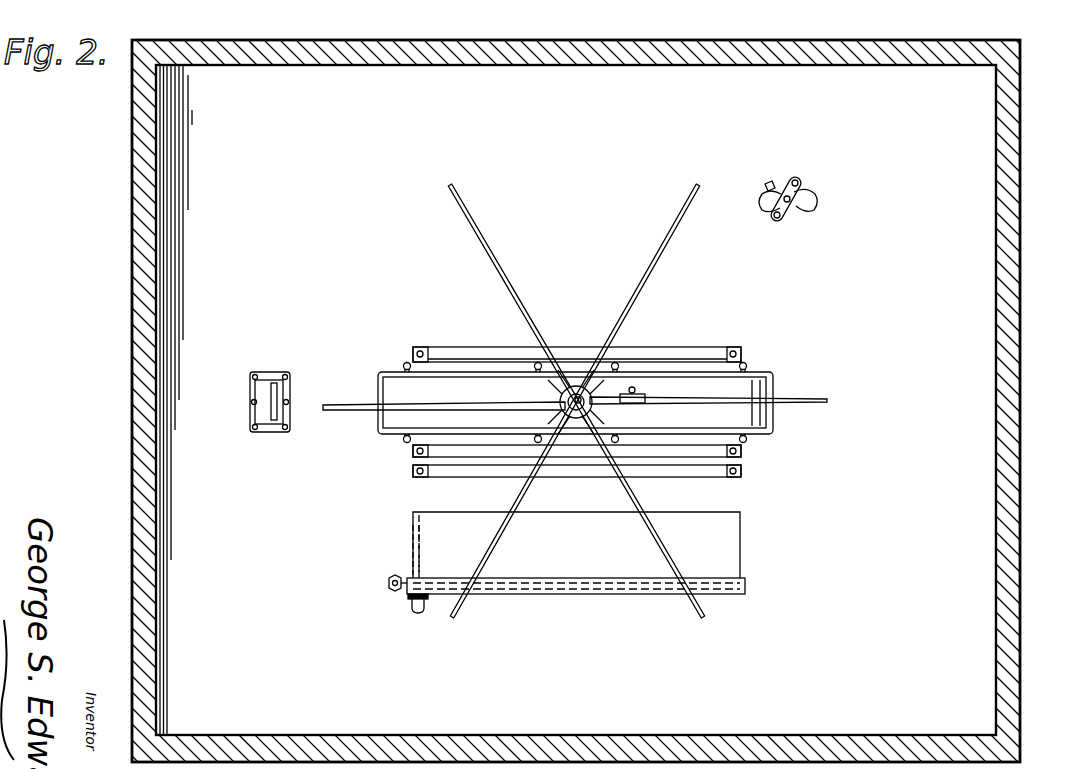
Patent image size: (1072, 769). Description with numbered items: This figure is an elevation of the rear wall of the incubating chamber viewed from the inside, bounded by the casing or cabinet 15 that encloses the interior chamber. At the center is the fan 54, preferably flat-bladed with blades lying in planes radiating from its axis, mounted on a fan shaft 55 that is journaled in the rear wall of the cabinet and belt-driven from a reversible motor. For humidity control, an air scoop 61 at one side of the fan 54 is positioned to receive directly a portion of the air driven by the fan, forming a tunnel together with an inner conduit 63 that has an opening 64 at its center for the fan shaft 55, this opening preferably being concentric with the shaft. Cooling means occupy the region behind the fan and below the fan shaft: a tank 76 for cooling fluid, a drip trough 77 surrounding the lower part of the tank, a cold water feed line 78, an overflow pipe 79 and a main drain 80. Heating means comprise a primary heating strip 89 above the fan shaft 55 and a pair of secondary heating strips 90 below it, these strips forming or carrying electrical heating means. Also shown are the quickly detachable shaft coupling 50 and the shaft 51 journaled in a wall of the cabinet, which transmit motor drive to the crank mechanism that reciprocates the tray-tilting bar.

The casing or cabinet 15 is at (1020, 348).
The quickly detachable shaft coupling 50 is at (802, 184).
The shaft 51 is at (793, 208).
The fan 54 is at (632, 311).
The fan shaft 55 is at (561, 400).
The air scoop 61 is at (262, 412).
The inner conduit 63 is at (383, 382).
The opening 64 is at (593, 408).
The tank 76 is at (736, 549).
The drip trough 77 is at (745, 586).
The cold water feed line 78 is at (387, 586).
The overflow pipe 79 is at (413, 540).
The main drain 80 is at (417, 614).
The primary heating strip 89 is at (466, 347).
The heating strips 90 is at (433, 476).